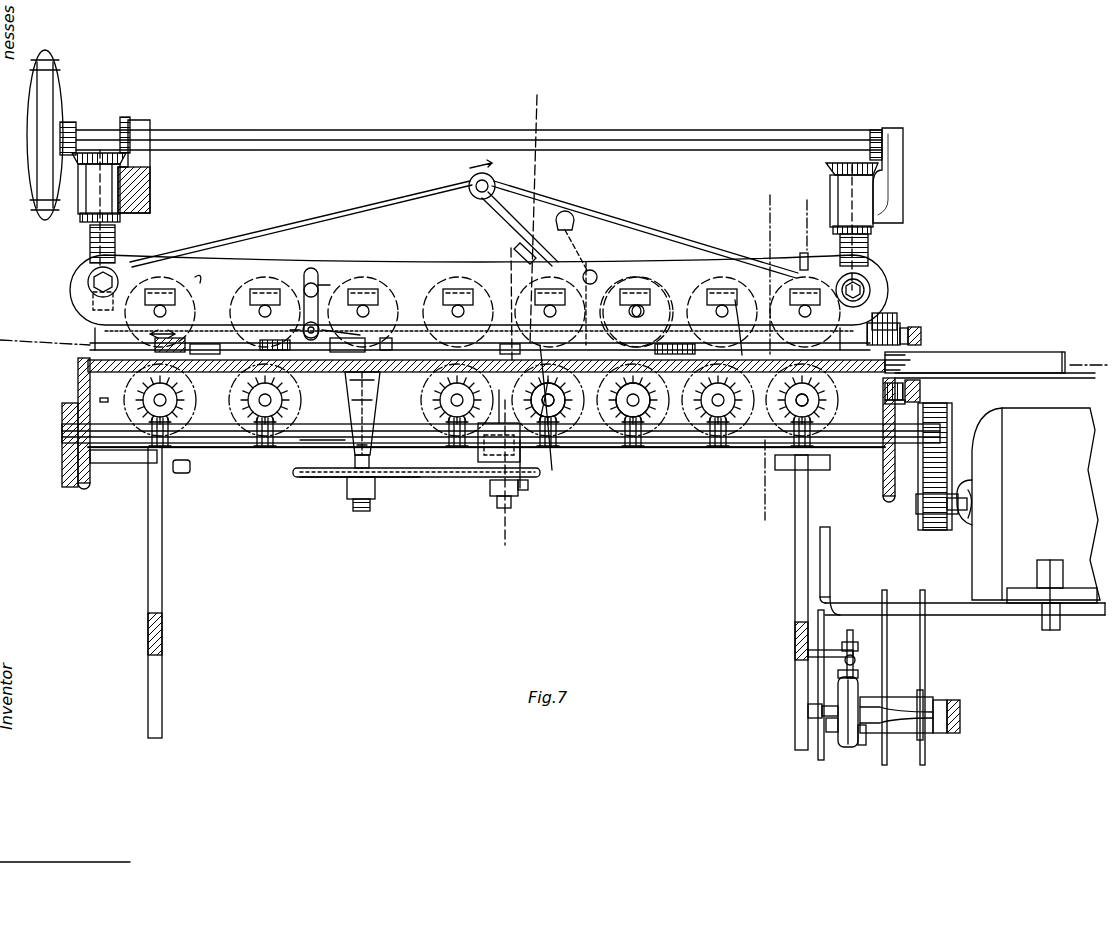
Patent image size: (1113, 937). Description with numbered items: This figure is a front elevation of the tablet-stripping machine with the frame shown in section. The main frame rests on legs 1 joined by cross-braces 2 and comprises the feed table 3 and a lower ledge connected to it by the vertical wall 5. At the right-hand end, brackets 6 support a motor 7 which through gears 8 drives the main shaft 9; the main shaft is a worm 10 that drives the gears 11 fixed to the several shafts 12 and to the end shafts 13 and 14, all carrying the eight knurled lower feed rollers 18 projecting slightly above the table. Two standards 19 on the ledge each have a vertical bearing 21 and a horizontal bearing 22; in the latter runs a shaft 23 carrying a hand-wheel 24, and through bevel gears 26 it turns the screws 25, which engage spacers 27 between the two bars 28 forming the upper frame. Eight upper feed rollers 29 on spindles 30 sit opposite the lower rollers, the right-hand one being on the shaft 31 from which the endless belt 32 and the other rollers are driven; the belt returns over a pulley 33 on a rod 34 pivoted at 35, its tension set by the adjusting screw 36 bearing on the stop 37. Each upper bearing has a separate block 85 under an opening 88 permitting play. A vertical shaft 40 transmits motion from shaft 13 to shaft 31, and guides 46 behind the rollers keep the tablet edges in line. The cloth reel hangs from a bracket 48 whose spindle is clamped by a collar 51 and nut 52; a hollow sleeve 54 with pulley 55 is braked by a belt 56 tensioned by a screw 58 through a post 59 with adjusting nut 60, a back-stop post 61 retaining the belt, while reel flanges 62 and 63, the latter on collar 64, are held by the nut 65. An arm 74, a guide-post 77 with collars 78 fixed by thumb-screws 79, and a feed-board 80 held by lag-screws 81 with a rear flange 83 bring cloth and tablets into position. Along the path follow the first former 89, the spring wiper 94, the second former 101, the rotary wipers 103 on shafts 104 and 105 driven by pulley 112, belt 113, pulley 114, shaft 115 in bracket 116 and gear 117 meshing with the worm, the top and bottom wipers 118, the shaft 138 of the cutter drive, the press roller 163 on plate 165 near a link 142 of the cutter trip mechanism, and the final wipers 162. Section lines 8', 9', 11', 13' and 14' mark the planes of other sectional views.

The legs 1 is at (162, 698).
The cross-braces 2 is at (162, 632).
The feed table 3 is at (90, 348).
The vertical wall 5 is at (78, 390).
The brackets 6 is at (978, 615).
The motor 7 is at (972, 573).
The gears 8 is at (944, 489).
The main shaft 9 is at (943, 466).
The section line 9'— 9' is at (819, 345).
The worm 10 is at (265, 445).
The gears 11 is at (621, 450).
The section line 11'— 11' is at (768, 352).
The shafts 12 is at (630, 408).
The end shaft 13 is at (832, 395).
The section line 13'— 13' is at (539, 209).
The end shaft 14 is at (465, 405).
The section line 14'— 14' is at (336, 370).
The frame 18 is at (486, 480).
The standards 19 is at (85, 325).
The vertical bearing 21 is at (78, 212).
The horizontal bearing 22 is at (150, 158).
The shaft 23 is at (354, 128).
The hand-wheel 24 is at (56, 135).
The screws 25 is at (115, 235).
The bevel gears 26 is at (122, 118).
The spacers 27 is at (88, 270).
The bars 28 is at (75, 290).
The upper feed rollers 29 is at (692, 262).
The spindles 30 is at (712, 308).
The shaft 31 is at (900, 318).
The endless belt 32 is at (85, 350).
The pulley 33 is at (470, 200).
The rod 34 is at (512, 218).
The pivot 35 is at (596, 270).
The adjusting screw 36 is at (575, 222).
The stop 37 is at (518, 246).
The vertical shaft 40 is at (808, 262).
The guides 46 is at (610, 270).
The bracket 48 is at (818, 670).
The collar 51 is at (832, 733).
The nut 52 is at (808, 710).
The hollow sleeve 54 is at (905, 702).
The pulley 55 is at (862, 744).
The belt 56 is at (838, 690).
The screw 58 is at (850, 628).
The post 59 is at (808, 653).
The adjusting nut 60 is at (856, 645).
The back-stop post 61 is at (858, 680).
The flange 62 is at (892, 590).
The flange 63 is at (917, 590).
The collar 64 is at (925, 695).
The nut 65 is at (960, 718).
The arm 74 is at (830, 545).
The post 77 is at (905, 325).
The collars 78 is at (910, 333).
The thumb-screws 79 is at (922, 335).
The feed-board 80 is at (1065, 378).
The lag-screws 81 is at (920, 400).
The flange 83 is at (1040, 350).
The bearing block 85 is at (178, 302).
The opening 88 is at (270, 290).
The first former 89 is at (735, 300).
The spring wiper 94 is at (640, 455).
The second former 101 is at (548, 450).
The rotary wipers 103 is at (478, 450).
The shaft 104 is at (490, 500).
The shaft 105 is at (512, 280).
The pulley 112 is at (532, 500).
The belt 113 is at (430, 460).
The pulley 114 is at (300, 480).
The shaft 115 is at (352, 506).
The bracket 116 is at (320, 460).
The gear 117 is at (340, 465).
The top and bottom wipers 118 is at (433, 480).
The shaft 138 is at (165, 445).
The link 142 is at (345, 318).
The wipers 162 is at (185, 340).
The press roller 163 is at (320, 318).
The plate 165 is at (295, 262).
The section line 8'— 8' is at (555, 350).